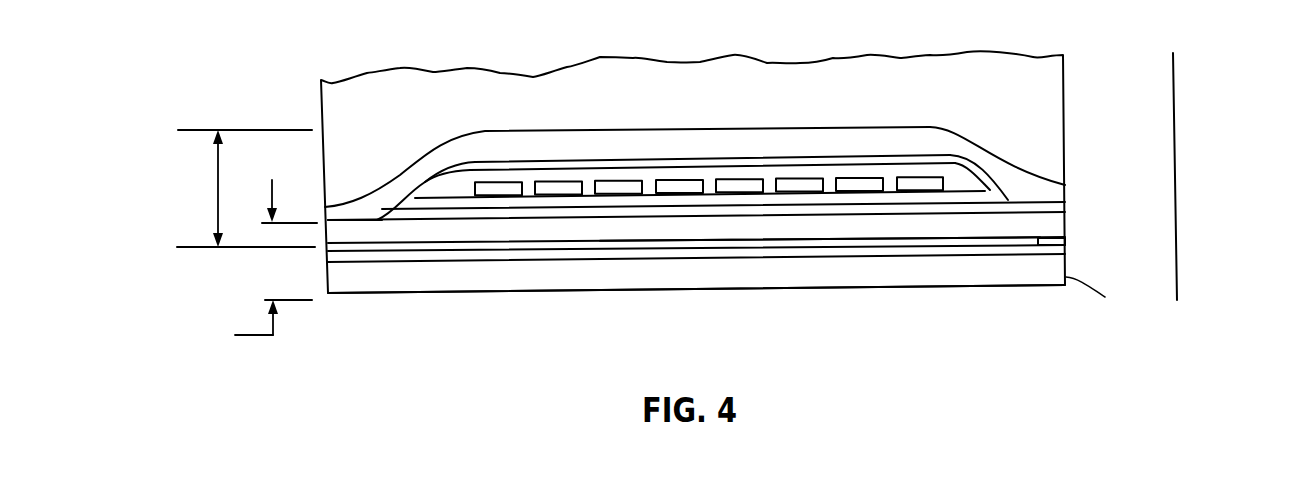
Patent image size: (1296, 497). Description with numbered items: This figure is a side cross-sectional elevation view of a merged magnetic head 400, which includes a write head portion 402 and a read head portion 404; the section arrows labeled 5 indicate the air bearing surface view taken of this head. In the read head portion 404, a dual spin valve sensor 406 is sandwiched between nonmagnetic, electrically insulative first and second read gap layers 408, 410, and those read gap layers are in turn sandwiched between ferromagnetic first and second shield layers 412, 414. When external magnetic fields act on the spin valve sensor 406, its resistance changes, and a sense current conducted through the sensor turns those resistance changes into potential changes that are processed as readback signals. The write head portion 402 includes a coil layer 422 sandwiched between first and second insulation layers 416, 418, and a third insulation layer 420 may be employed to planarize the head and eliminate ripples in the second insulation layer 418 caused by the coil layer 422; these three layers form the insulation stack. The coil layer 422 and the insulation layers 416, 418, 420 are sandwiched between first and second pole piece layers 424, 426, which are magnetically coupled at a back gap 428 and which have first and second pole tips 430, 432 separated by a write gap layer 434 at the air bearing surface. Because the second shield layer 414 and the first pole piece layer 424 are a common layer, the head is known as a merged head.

The merged magnetic head 400 is at (288, 94).
The write head portion 402 is at (206, 188).
The read head portion 404 is at (221, 345).
The dual spin valve sensor 406 is at (1066, 252).
The first read gap layer 408 is at (758, 259).
The second read gap layer 410 is at (717, 237).
The first shield layer 412 is at (825, 273).
The second shield layer 414 is at (920, 225).
The first pole piece layer 424 is at (820, 287).
The first insulation layer 416 is at (623, 203).
The second insulation layer 418 is at (957, 180).
The third insulation layer 420 is at (527, 160).
The coil layer 422 is at (738, 187).
The second pole piece layer 426 is at (838, 140).
The back gap 428 is at (360, 220).
The first pole tip 430 is at (1062, 222).
The second pole tip 432 is at (1060, 192).
The write gap layer 434 is at (1062, 204).
The section line for FIG. 5 is at (1195, 58).